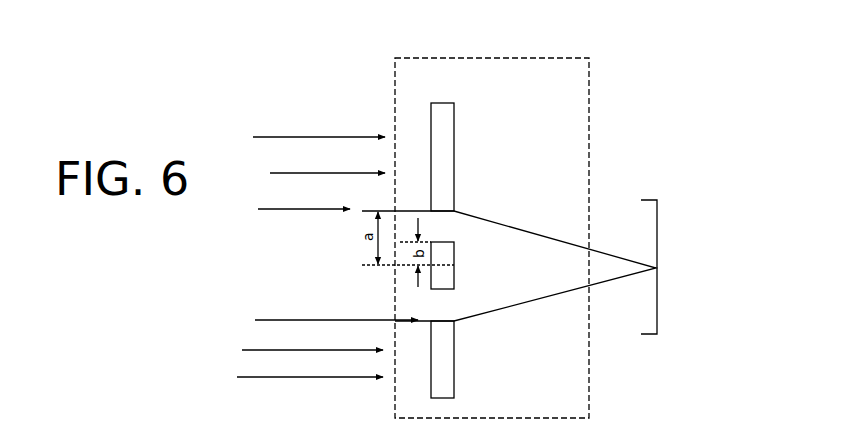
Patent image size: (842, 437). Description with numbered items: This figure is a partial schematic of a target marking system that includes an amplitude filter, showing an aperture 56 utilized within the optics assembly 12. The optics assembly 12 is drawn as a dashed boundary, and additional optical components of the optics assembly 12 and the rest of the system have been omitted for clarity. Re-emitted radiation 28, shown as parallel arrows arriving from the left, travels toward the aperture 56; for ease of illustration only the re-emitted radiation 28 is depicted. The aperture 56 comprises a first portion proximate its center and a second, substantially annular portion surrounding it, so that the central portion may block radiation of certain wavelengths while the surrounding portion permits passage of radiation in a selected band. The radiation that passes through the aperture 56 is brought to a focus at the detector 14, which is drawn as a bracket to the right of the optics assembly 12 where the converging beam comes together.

The optics assembly 12 is at (589, 76).
The detector 14 is at (657, 206).
The re-emitted radiation 28 is at (280, 211).
The aperture 56 is at (455, 124).